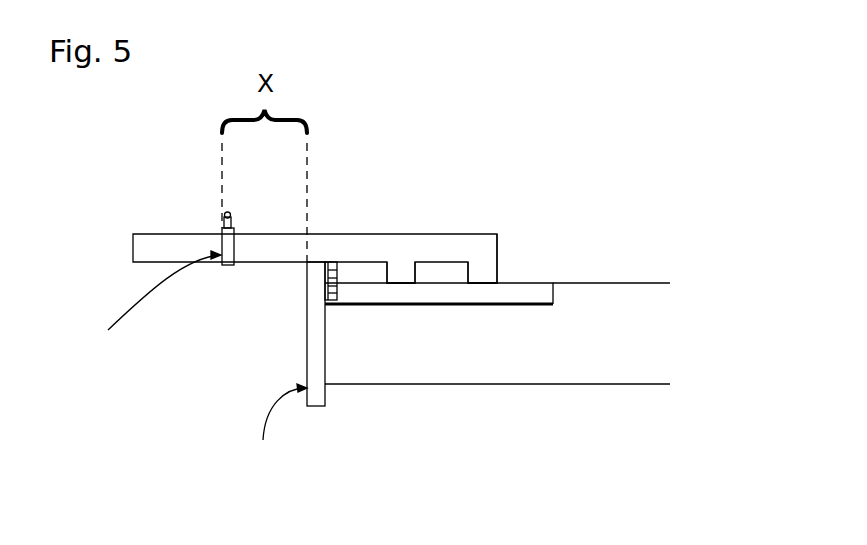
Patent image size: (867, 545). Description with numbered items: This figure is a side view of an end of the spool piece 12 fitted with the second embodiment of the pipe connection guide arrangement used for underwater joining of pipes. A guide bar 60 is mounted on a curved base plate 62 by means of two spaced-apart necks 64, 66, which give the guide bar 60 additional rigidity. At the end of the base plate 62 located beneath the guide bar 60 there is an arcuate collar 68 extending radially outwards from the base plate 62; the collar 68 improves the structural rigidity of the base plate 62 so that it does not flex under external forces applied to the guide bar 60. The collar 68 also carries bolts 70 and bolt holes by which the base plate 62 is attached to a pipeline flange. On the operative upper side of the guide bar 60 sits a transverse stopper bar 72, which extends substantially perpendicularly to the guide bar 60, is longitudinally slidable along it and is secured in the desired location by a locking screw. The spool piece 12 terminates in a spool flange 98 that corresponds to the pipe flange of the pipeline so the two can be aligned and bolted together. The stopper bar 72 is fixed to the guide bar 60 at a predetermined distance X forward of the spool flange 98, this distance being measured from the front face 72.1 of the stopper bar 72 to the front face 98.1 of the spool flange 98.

The spool piece 12 is at (599, 364).
The guide bar 60 is at (340, 240).
The base plate 62 is at (529, 291).
The neck 64 is at (486, 273).
The neck 66 is at (397, 272).
The collar 68 is at (328, 283).
The bolts 70 is at (334, 282).
The stopper bar 72 is at (225, 262).
The front face of the stopper bar 72.1 is at (143, 307).
The spool flange 98 is at (319, 388).
The front face of the spool flange 98.1 is at (273, 440).